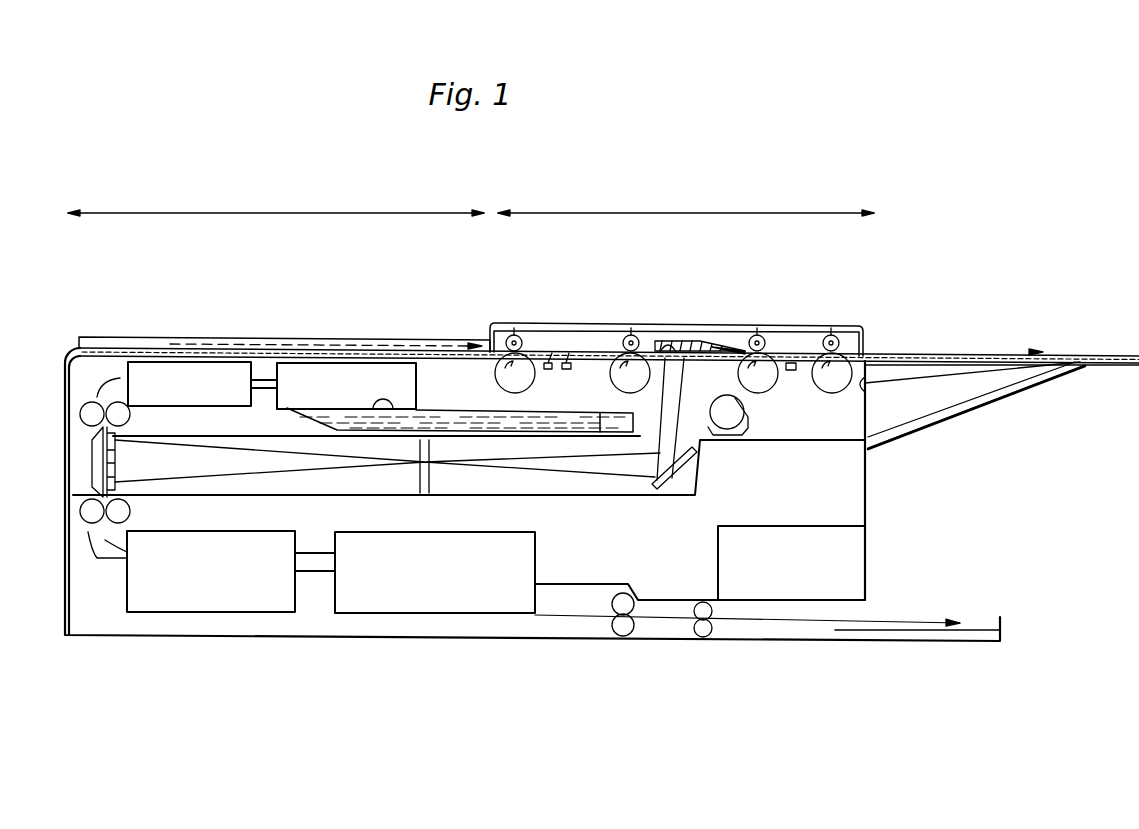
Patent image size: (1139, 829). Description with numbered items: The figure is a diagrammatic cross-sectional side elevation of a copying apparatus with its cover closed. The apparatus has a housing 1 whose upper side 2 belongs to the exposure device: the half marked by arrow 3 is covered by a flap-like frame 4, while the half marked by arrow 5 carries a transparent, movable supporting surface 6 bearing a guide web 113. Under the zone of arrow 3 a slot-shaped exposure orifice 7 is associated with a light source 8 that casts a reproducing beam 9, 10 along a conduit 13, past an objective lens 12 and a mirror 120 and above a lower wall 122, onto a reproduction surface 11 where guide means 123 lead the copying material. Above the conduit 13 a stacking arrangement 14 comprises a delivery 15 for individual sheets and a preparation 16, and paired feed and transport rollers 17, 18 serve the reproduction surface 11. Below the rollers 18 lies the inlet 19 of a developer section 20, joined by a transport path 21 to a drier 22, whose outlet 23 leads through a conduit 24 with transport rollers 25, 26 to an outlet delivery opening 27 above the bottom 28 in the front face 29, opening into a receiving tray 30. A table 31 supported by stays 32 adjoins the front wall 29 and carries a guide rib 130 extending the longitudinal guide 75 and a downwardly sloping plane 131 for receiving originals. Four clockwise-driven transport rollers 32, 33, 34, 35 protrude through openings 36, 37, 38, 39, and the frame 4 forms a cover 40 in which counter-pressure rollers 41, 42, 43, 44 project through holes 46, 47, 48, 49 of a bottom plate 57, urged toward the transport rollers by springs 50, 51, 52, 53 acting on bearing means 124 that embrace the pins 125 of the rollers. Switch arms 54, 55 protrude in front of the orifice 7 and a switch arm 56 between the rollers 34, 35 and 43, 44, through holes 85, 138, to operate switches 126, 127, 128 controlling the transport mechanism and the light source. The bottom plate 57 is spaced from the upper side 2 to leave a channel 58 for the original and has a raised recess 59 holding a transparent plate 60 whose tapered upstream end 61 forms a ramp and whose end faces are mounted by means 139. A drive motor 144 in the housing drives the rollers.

The housing 1 is at (867, 508).
The upper side 2 is at (103, 347).
The arrow 3 is at (728, 213).
The frame 4 is at (788, 352).
The arrow 5 is at (305, 213).
The supporting surface 6 is at (158, 351).
The exposure orifice 7 is at (665, 362).
The light source 8 is at (729, 428).
The reproducing beam 9 is at (690, 449).
The reproducing beam 10 is at (314, 463).
The reproduction surface 11 is at (122, 496).
The lens holder 12 is at (428, 470).
The conduit 13 is at (451, 440).
The stacking arrangement 14 is at (363, 416).
The delivery 15 is at (299, 368).
The preparation 16 is at (208, 368).
The feed and transport rollers 17 is at (131, 415).
The feed and transport rollers 18 is at (123, 524).
The inlet 19 is at (111, 548).
The developer section 20 is at (209, 617).
The transport path 21 is at (311, 573).
The drier 22 is at (397, 613).
The outlet 23 is at (538, 606).
The conduit 24 is at (797, 622).
The transport rollers 25 is at (626, 637).
The transport rollers 26 is at (704, 637).
The outlet delivery opening 27 is at (880, 603).
The bottom 28 is at (909, 631).
The front face 29 is at (867, 467).
The receiving tray 30 is at (982, 628).
The table 31 is at (1048, 362).
The transport roller 32 is at (508, 376).
The transport roller 33 is at (632, 386).
The transport roller 34 is at (757, 393).
The transport roller 35 is at (860, 388).
The opening 36 is at (490, 350).
The opening 37 is at (627, 356).
The opening 38 is at (737, 354).
The opening 39 is at (880, 350).
The cover 40 is at (717, 352).
The counter-pressure roller 41 is at (506, 362).
The counter-pressure roller 42 is at (642, 348).
The counter-pressure roller 43 is at (763, 348).
The counter-pressure roller 44 is at (848, 352).
The hole 46 is at (537, 352).
The hole 47 is at (665, 350).
The hole 48 is at (770, 346).
The hole 49 is at (858, 354).
The spring 50 is at (516, 337).
The spring 51 is at (635, 337).
The spring 52 is at (759, 336).
The spring 53 is at (832, 336).
The switch arm 54 is at (550, 370).
The switch arm 55 is at (568, 360).
The switch arm 56 is at (793, 371).
The bottom plate 57 is at (593, 352).
The channel 58 is at (802, 352).
The recess 59 is at (703, 350).
The transparent plate 60 is at (706, 356).
The upstream end 61 is at (683, 350).
The longitudinal guide 75 is at (866, 352).
The hole 85 is at (563, 358).
The guide web 113 is at (400, 342).
The mirror 120 is at (676, 496).
The lower wall 122 is at (419, 490).
The guide means 123 is at (116, 450).
The bearing means 124 is at (522, 350).
The pins 125 is at (510, 336).
The switch 126 is at (546, 371).
The switch 127 is at (566, 371).
The switch 128 is at (786, 372).
The guide rib 130 is at (1113, 349).
The downwardly sloping plane 131 is at (957, 372).
The hole 138 is at (812, 390).
The mounting means 139 is at (696, 362).
The drive motor 144 is at (772, 575).